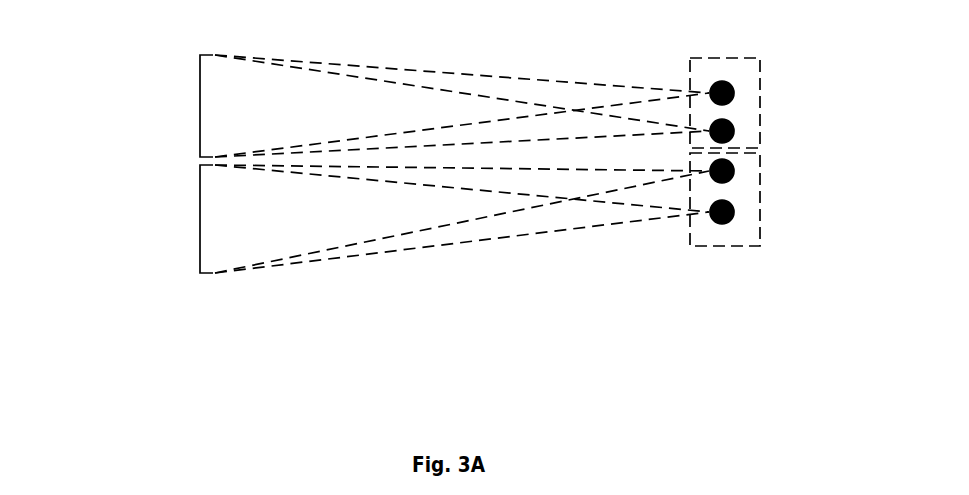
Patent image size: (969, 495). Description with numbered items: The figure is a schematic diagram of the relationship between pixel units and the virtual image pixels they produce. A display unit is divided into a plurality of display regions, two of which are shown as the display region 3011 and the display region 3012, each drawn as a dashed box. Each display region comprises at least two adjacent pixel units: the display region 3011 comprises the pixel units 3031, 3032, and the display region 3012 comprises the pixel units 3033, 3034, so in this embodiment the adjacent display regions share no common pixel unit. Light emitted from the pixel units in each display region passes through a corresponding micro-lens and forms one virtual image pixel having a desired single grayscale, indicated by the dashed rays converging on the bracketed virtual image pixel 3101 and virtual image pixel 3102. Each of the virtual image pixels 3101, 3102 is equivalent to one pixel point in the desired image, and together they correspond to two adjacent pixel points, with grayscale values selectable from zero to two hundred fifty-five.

The virtual image pixel 3101 is at (200, 112).
The virtual image pixel 3102 is at (199, 238).
The display region 3011 is at (705, 57).
The display region 3012 is at (725, 247).
The pixel unit 3031 is at (731, 84).
The pixel unit 3032 is at (731, 123).
The pixel unit 3033 is at (732, 180).
The pixel unit 3034 is at (733, 222).